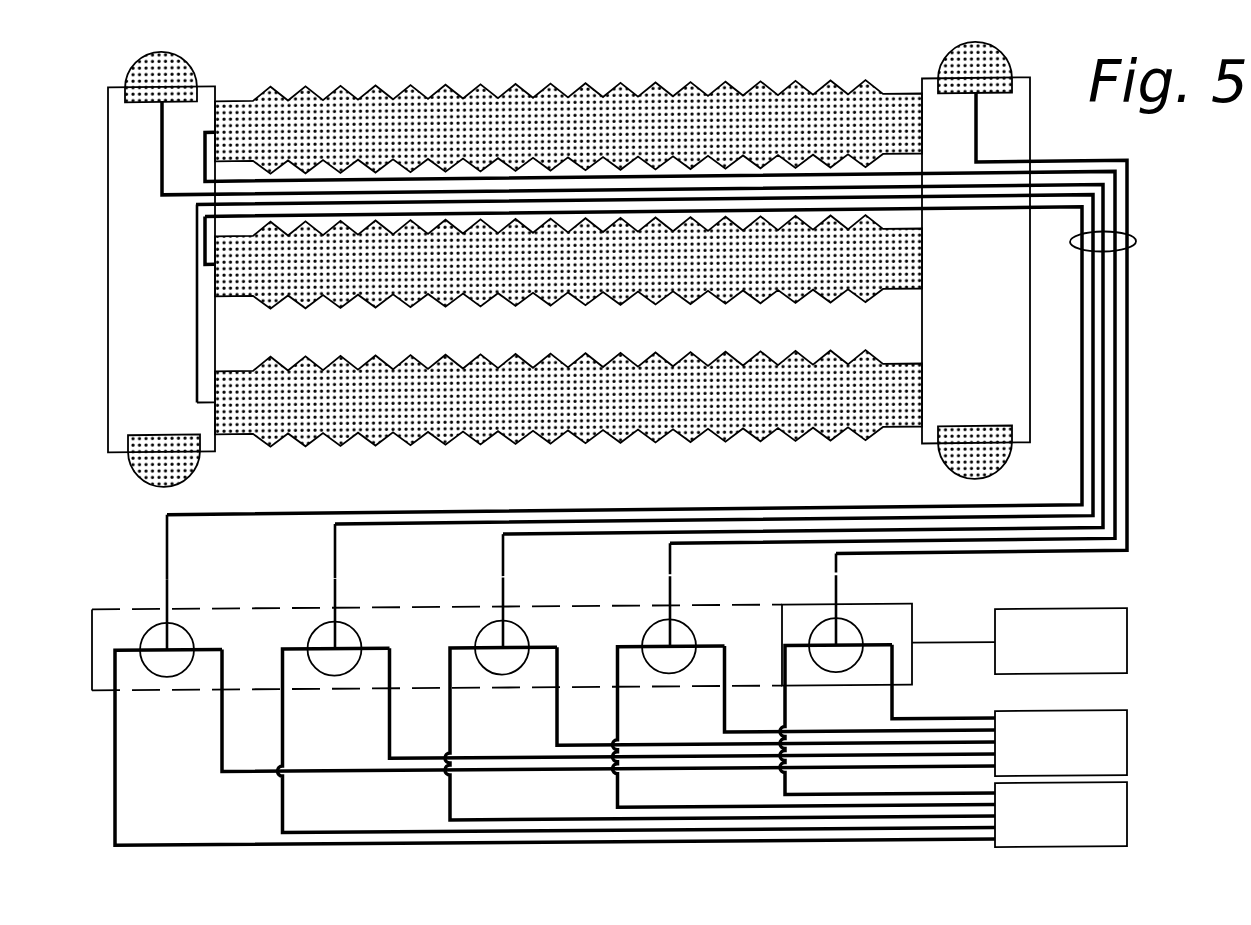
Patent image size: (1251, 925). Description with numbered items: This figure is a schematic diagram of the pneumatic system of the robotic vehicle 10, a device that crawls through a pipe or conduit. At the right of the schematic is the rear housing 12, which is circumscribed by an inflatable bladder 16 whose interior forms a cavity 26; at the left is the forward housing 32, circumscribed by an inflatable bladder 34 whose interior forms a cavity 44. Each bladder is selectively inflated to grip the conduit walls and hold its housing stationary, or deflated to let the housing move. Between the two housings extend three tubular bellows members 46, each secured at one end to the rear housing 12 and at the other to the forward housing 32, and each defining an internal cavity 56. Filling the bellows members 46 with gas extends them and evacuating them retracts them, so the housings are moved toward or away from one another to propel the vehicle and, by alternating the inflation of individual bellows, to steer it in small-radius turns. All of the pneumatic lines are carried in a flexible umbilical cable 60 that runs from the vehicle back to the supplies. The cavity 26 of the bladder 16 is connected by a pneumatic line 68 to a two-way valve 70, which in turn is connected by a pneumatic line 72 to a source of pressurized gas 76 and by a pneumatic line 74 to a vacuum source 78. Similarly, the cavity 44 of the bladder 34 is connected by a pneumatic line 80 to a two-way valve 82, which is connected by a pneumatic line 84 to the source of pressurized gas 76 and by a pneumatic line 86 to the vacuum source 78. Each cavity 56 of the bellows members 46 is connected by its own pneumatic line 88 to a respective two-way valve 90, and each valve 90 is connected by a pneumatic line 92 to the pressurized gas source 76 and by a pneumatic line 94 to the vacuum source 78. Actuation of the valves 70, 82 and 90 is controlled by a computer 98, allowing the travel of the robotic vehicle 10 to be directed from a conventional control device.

The robotic vehicle 10 is at (716, 56).
The rear housing 12 is at (961, 323).
The inflatable bladder 16 is at (1001, 62).
The cavity 26 is at (961, 95).
The forward housing 32 is at (157, 397).
The inflatable bladder 34 is at (197, 63).
The cavity 44 is at (141, 99).
The bellows members 46 is at (528, 95).
The cavity 56 is at (515, 148).
The umbilical cable 60 is at (1136, 252).
The pneumatic line 68 is at (976, 134).
The two-way valve 70 is at (857, 630).
The pneumatic line 72 is at (918, 725).
The pneumatic line 74 is at (789, 650).
The source of pressurized gas 76 is at (1044, 764).
The vacuum source 78 is at (1044, 837).
The pneumatic line 80 is at (161, 122).
The two-way valve 82 is at (527, 652).
The pneumatic line 84 is at (560, 671).
The pneumatic line 86 is at (459, 651).
The pneumatic line 88 is at (205, 160).
The two-way valve 90 is at (192, 649).
The pneumatic line 92 is at (225, 669).
The pneumatic line 94 is at (124, 649).
The computer 98 is at (1044, 662).